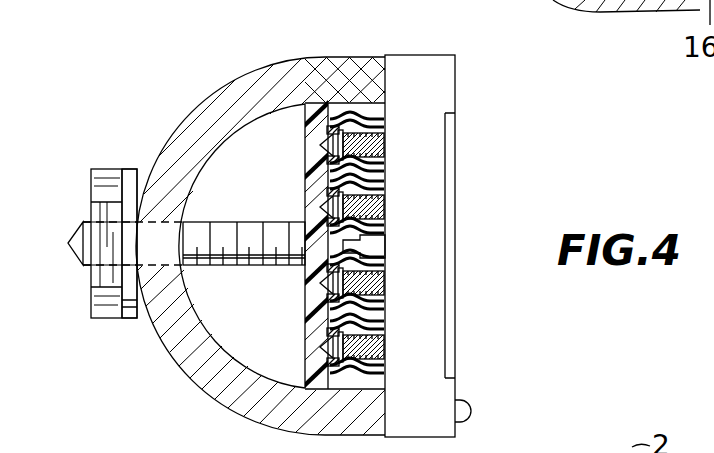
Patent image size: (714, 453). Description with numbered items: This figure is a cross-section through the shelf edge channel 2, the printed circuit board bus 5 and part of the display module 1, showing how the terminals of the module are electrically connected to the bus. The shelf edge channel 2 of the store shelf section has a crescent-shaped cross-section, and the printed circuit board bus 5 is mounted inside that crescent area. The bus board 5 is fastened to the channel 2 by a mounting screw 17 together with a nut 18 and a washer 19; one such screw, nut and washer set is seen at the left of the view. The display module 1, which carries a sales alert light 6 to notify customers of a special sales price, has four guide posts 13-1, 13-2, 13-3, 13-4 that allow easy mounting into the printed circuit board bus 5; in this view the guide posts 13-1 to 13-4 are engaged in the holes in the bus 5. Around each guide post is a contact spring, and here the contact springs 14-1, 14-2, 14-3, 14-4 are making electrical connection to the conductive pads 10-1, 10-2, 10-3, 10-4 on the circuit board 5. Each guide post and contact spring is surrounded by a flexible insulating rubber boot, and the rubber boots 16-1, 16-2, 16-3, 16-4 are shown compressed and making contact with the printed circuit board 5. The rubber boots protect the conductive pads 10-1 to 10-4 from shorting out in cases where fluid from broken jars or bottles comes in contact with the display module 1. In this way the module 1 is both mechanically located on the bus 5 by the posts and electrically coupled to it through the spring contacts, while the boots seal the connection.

The display module 1 is at (447, 89).
The shelf edge channel 2 is at (580, 8).
The printed circuit board bus 5 is at (307, 62).
The sales alert light 6 is at (470, 412).
The conductive pad 10-1 is at (328, 362).
The conductive pad 10-2 is at (330, 298).
The conductive pad 10-3 is at (330, 192).
The conductive pad 10-4 is at (328, 132).
The guide post 13-1 is at (322, 347).
The guide post 13-2 is at (322, 283).
The guide post 13-3 is at (322, 207).
The guide post 13-4 is at (322, 143).
The contact spring 14-1 is at (385, 348).
The contact spring 14-2 is at (385, 283).
The contact spring 14-3 is at (385, 204).
The contact spring 14-4 is at (385, 142).
The rubber boot 16-1 is at (372, 119).
The rubber boot 16-2 is at (385, 174).
The rubber boot 16-3 is at (385, 244).
The rubber boot 16-4 is at (385, 312).
The mounting screw 17 is at (76, 236).
The nut 18 is at (108, 172).
The washer 19 is at (128, 319).